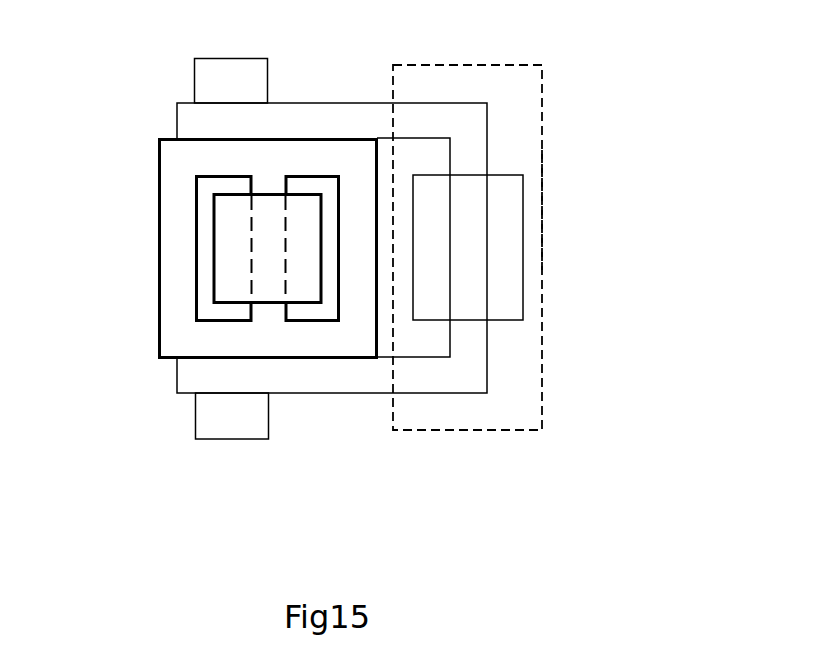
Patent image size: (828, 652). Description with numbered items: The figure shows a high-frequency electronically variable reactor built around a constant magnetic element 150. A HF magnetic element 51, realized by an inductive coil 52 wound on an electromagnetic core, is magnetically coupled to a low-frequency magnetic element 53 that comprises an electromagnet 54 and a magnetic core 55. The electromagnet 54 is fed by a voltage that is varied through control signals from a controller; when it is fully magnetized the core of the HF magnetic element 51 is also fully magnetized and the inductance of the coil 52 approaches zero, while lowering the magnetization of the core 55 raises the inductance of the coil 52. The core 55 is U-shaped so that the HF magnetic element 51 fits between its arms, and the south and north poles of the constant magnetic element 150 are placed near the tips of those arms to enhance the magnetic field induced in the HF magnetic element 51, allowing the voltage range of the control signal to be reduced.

The HF magnetic element 51 is at (178, 195).
The inductive coil 52 is at (233, 265).
The low-frequency magnetic element 53 is at (542, 210).
The electromagnet 54 is at (505, 302).
The magnetic core 55 is at (448, 122).
The constant magnetic element 150 is at (250, 87).